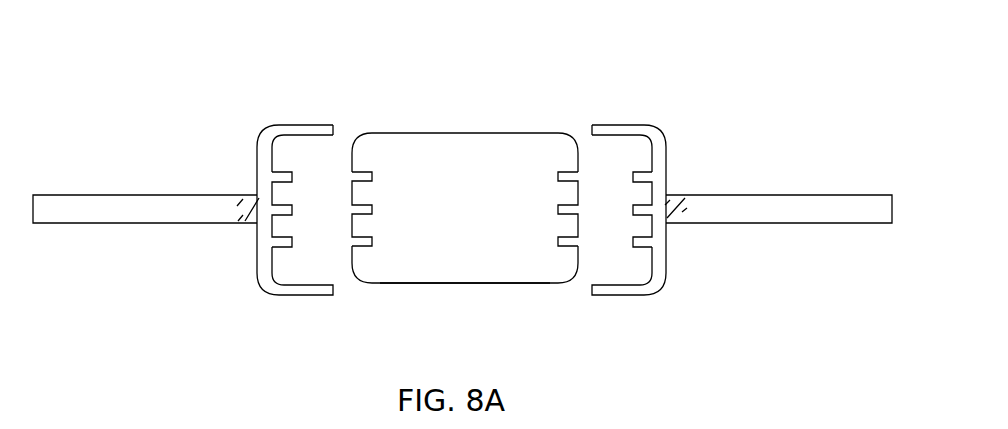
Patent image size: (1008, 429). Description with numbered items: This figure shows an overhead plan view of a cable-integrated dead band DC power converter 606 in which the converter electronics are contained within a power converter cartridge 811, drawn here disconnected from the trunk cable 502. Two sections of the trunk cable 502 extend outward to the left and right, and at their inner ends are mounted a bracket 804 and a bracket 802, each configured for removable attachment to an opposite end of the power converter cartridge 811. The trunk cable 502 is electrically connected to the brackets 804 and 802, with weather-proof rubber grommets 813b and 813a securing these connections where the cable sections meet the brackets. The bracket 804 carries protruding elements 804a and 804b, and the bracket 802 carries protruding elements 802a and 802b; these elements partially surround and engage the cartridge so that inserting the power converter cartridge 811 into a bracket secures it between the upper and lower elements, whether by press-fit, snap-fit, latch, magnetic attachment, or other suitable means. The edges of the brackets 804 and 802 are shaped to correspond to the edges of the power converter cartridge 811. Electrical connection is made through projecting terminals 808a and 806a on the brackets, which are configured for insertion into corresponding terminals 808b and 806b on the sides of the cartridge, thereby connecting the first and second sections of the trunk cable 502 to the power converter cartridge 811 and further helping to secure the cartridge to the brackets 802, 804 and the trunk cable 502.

The trunk cable 502 is at (50, 195).
The cable-integrated dead band DC power converter 606 is at (465, 197).
The bracket 802 is at (658, 222).
The protruding element 802a is at (607, 125).
The protruding element 802b is at (633, 293).
The bracket 804 is at (290, 219).
The protruding element 804a is at (297, 125).
The protruding element 804b is at (305, 295).
The projecting terminal 806a is at (633, 178).
The terminal 806b is at (557, 178).
The projecting terminal 808a is at (325, 155).
The terminal 808b is at (397, 160).
The power converter cartridge 811 is at (472, 285).
The weather-proof rubber grommet 813a is at (677, 195).
The weather-proof rubber grommet 813b is at (255, 193).